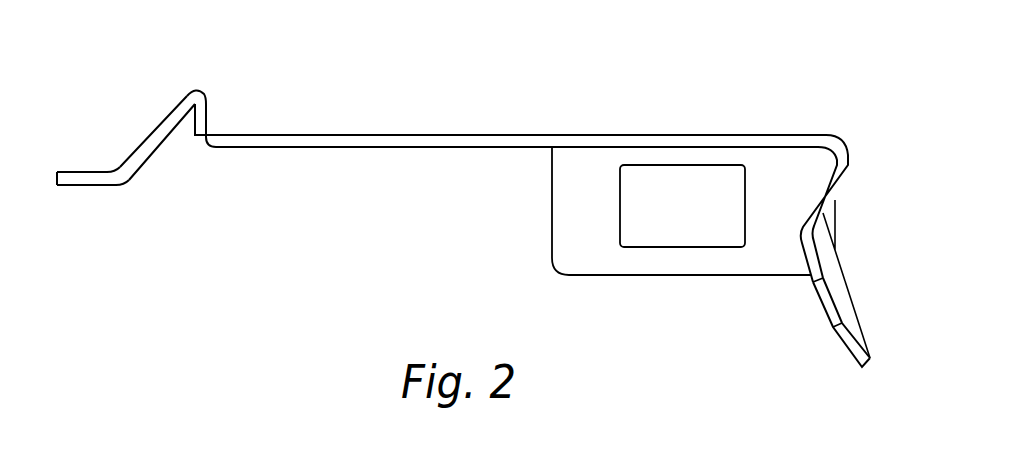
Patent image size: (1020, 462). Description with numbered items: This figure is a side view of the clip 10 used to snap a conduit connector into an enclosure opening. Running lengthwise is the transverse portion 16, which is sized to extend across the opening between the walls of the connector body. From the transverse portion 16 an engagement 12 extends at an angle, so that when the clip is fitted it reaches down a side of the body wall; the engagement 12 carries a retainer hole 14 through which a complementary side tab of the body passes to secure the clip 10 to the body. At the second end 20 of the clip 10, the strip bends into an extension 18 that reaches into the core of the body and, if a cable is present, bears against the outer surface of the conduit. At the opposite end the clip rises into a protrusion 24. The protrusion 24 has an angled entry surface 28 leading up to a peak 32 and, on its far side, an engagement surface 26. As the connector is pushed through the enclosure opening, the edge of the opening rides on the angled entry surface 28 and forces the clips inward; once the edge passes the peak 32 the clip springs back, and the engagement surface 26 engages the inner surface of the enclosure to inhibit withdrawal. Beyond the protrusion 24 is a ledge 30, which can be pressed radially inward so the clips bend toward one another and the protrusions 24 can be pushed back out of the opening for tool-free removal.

The clip 10 is at (595, 95).
The engagement 12 is at (690, 263).
The retainer hole 14 is at (645, 208).
The transverse portion 16 is at (672, 138).
The extension 18 is at (825, 305).
The second end 20 is at (830, 134).
The protrusion 24 is at (185, 144).
The engagement surface 26 is at (210, 118).
The angled entry surface 28 is at (150, 132).
The ledge 30 is at (83, 187).
The peak 32 is at (200, 92).